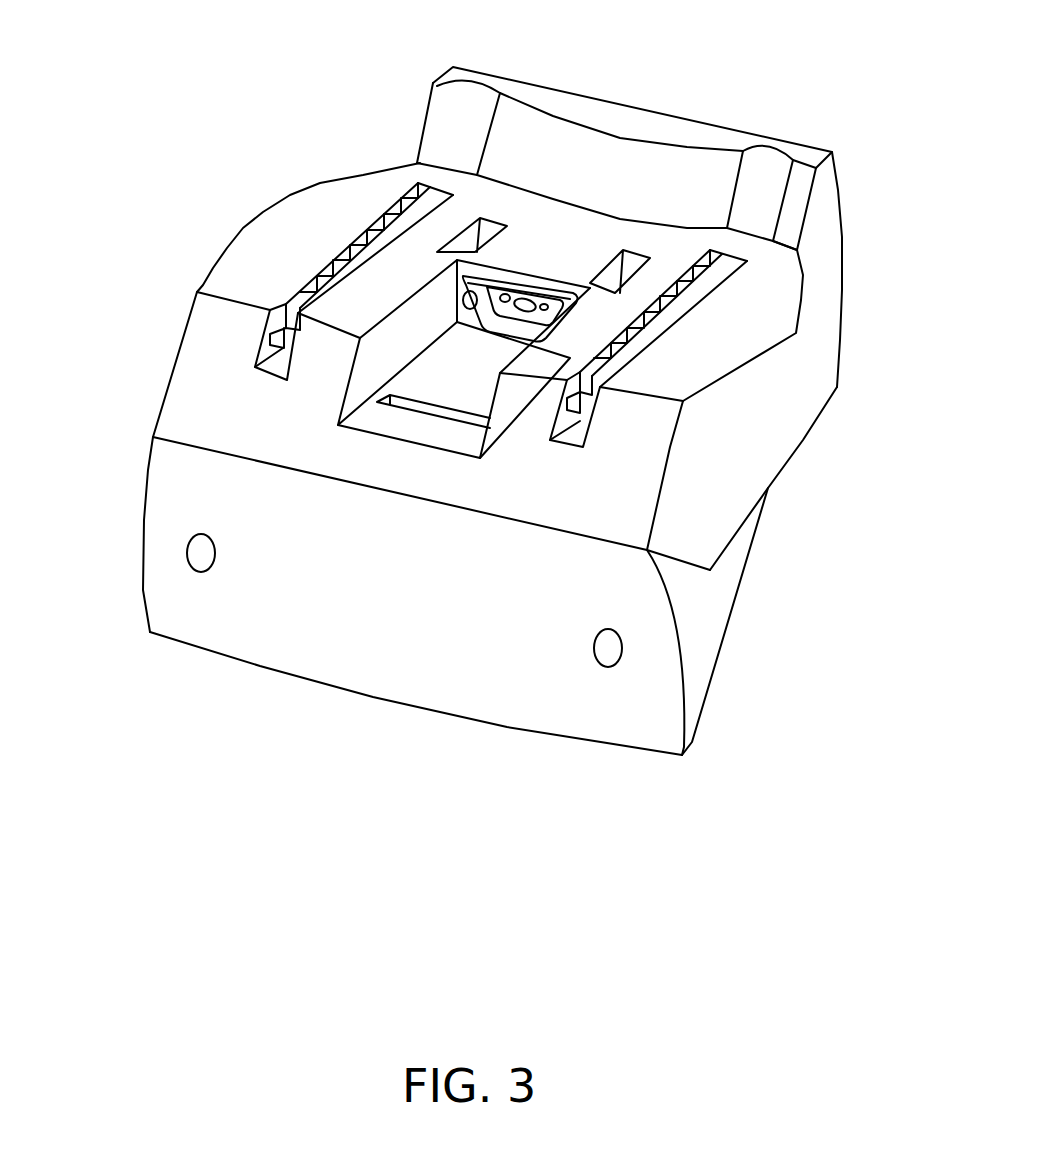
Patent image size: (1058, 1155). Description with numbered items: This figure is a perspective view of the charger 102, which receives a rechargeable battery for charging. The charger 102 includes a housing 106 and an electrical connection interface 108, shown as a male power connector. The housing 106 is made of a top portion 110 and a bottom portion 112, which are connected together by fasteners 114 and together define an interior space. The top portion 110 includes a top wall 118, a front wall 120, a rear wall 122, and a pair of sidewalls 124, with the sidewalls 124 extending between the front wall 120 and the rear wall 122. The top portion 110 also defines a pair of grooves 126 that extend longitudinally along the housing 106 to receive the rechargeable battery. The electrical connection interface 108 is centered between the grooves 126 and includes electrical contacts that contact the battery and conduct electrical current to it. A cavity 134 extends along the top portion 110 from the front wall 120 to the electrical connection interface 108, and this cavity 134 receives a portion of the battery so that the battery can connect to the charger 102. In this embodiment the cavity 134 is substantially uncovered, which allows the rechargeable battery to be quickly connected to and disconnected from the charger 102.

The charger 102 is at (291, 73).
The housing 106 is at (860, 146).
The electrical connection interface 108 is at (524, 290).
The top portion 110 is at (371, 167).
The bottom portion 112 is at (273, 634).
The fasteners 114 is at (183, 602).
The top wall 118 is at (780, 300).
The front wall 120 is at (256, 411).
The rear wall 122 is at (768, 132).
The sidewalls 124 is at (747, 450).
The grooves 126 is at (297, 290).
The cavity 134 is at (447, 387).